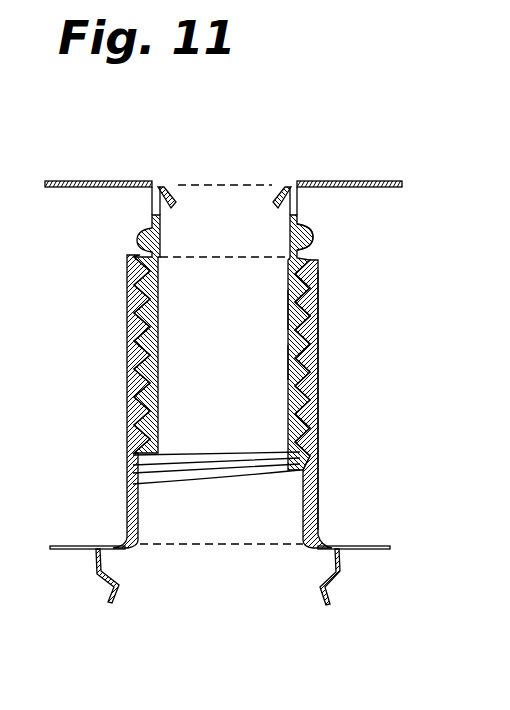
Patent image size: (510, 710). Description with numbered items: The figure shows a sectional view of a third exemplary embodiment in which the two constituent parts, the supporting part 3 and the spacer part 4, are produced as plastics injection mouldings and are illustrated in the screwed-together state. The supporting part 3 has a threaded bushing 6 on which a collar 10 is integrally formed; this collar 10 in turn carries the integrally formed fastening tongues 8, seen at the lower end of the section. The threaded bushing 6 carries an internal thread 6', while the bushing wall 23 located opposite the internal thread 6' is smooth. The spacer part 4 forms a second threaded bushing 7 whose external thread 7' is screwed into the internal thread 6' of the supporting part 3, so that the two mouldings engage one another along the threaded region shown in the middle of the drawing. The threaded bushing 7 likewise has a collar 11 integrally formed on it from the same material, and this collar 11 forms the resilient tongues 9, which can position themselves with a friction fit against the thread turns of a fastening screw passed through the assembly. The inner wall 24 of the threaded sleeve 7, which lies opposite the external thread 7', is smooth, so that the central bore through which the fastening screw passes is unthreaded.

The supporting part 3 is at (315, 502).
The spacer part 4 is at (313, 225).
The threaded bushing 6 is at (358, 316).
The internal thread 6' is at (281, 439).
The threaded bushing 7 is at (261, 310).
The external thread 7' is at (363, 250).
The fastening tongues 8 is at (334, 582).
The resilient tongues 9 is at (168, 188).
The collar 10 is at (375, 546).
The collar 11 is at (348, 180).
The bushing wall 23 is at (318, 389).
The inner wall 24 is at (288, 362).